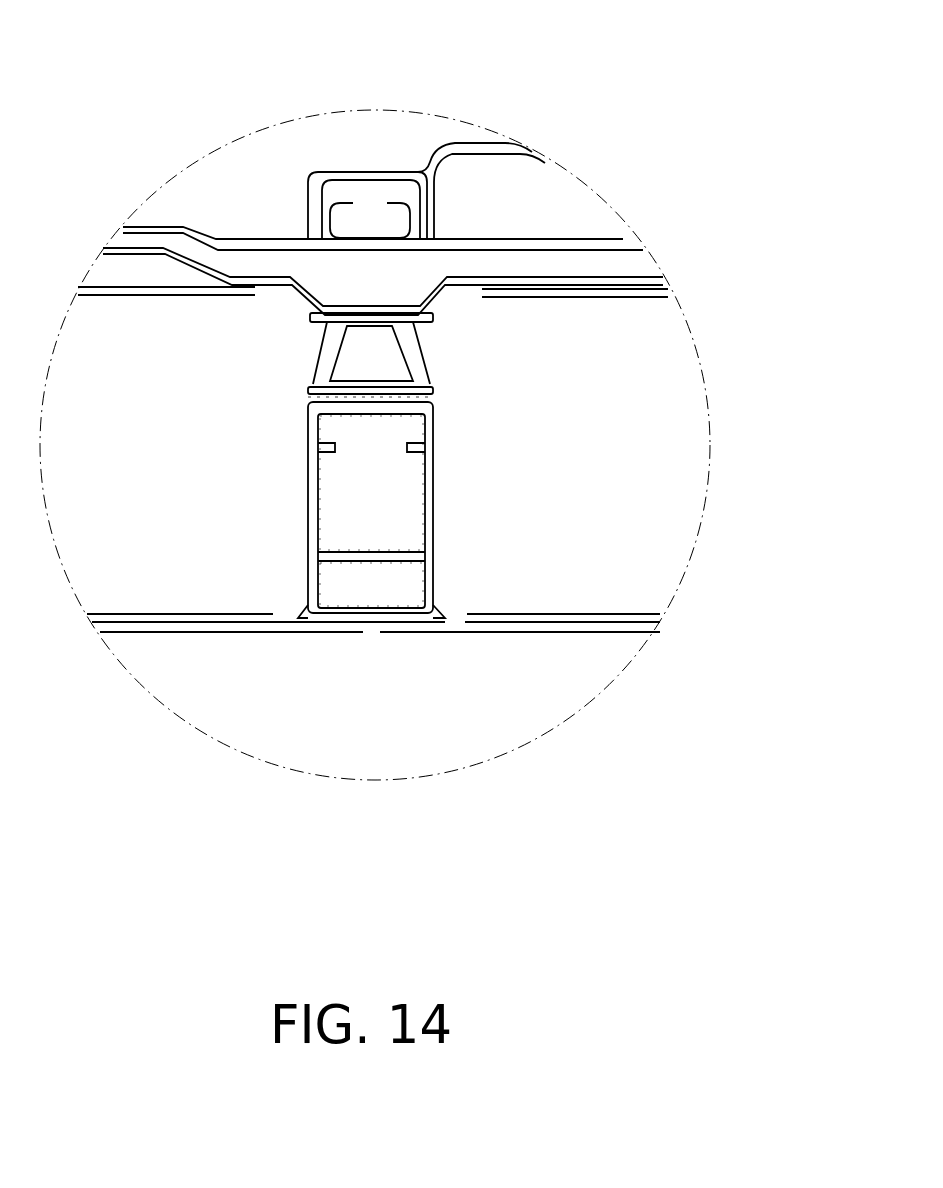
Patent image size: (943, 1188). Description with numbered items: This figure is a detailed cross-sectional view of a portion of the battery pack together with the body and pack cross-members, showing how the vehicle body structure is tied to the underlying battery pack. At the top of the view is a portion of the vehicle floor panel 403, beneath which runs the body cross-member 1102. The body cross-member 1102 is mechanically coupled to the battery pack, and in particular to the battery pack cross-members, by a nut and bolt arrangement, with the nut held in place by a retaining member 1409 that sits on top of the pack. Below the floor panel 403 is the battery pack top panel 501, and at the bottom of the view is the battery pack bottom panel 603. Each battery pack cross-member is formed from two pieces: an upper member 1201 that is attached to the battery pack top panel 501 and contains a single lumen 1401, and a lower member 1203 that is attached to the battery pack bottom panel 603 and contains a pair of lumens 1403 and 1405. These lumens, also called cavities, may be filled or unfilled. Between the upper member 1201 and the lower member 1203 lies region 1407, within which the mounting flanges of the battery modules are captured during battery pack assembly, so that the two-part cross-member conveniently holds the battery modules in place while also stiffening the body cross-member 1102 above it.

The vehicle floor panel 403 is at (160, 223).
The battery pack top panel 501 is at (602, 278).
The battery pack bottom panel 603 is at (462, 633).
The body cross-member 1102 is at (433, 177).
The retaining member 1409 is at (345, 202).
The upper member 1201 is at (410, 350).
The lumen 1401 is at (340, 348).
The region 1407 is at (440, 388).
The lower member 1203 is at (428, 485).
The lumen 1403 is at (332, 478).
The lumen 1405 is at (396, 580).